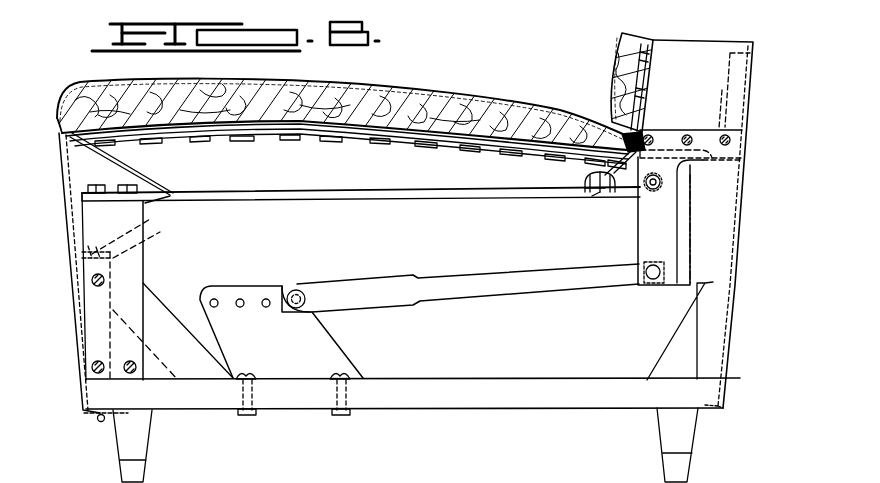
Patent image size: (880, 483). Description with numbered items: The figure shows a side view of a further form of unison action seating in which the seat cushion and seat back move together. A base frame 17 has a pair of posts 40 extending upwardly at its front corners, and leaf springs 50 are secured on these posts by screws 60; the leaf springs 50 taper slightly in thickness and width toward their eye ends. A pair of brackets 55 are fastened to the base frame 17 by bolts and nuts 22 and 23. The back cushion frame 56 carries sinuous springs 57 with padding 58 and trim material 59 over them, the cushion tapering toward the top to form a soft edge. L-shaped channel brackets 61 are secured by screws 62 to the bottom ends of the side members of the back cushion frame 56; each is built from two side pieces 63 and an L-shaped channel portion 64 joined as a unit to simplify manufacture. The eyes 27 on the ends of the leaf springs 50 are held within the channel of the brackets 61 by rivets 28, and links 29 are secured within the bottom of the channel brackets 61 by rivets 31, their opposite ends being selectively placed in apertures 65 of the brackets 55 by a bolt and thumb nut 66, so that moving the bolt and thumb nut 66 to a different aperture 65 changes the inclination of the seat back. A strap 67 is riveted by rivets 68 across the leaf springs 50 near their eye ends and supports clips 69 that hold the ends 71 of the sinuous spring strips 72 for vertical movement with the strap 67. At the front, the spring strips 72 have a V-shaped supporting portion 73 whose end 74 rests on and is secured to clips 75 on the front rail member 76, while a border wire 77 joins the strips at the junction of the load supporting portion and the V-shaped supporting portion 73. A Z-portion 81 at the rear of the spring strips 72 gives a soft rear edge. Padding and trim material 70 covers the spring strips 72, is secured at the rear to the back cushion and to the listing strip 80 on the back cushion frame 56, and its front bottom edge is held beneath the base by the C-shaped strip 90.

The base frame 17 is at (500, 403).
The bolts 22 is at (332, 402).
The nuts 23 is at (242, 415).
The eyes 27 is at (662, 182).
The rivets 28 is at (647, 188).
The links 29 is at (523, 284).
The rivets 31 is at (648, 283).
The posts 40 is at (147, 278).
The leaf springs 50 is at (412, 198).
The brackets 55 is at (338, 347).
The back cushion frame 56 is at (728, 40).
The sinuous springs 57 is at (641, 130).
The padding 58 is at (628, 140).
The trim material 59 is at (622, 40).
The screws 60 is at (99, 185).
The L-shaped channel brackets 61 is at (675, 133).
The screws 62 is at (649, 134).
The side pieces 63 is at (640, 231).
The L-shaped channel portion 64 is at (683, 228).
The apertures 65 is at (219, 300).
The bolt and thumb nut 66 is at (300, 290).
The strap 67 is at (593, 184).
The rivets 68 is at (594, 197).
The clips 69 is at (592, 172).
The padding and trim material 70 is at (403, 83).
The ends 71 is at (620, 155).
The sinuous spring strips 72 is at (375, 144).
The V-shaped supporting portion 73 is at (135, 176).
The end 74 is at (147, 247).
The clips 75 is at (78, 238).
The front rail member 76 is at (94, 363).
The border wire 77 is at (56, 146).
The listing strip 80 is at (718, 72).
The Z-portion 81 is at (612, 152).
The C-shaped strip 90 is at (100, 421).